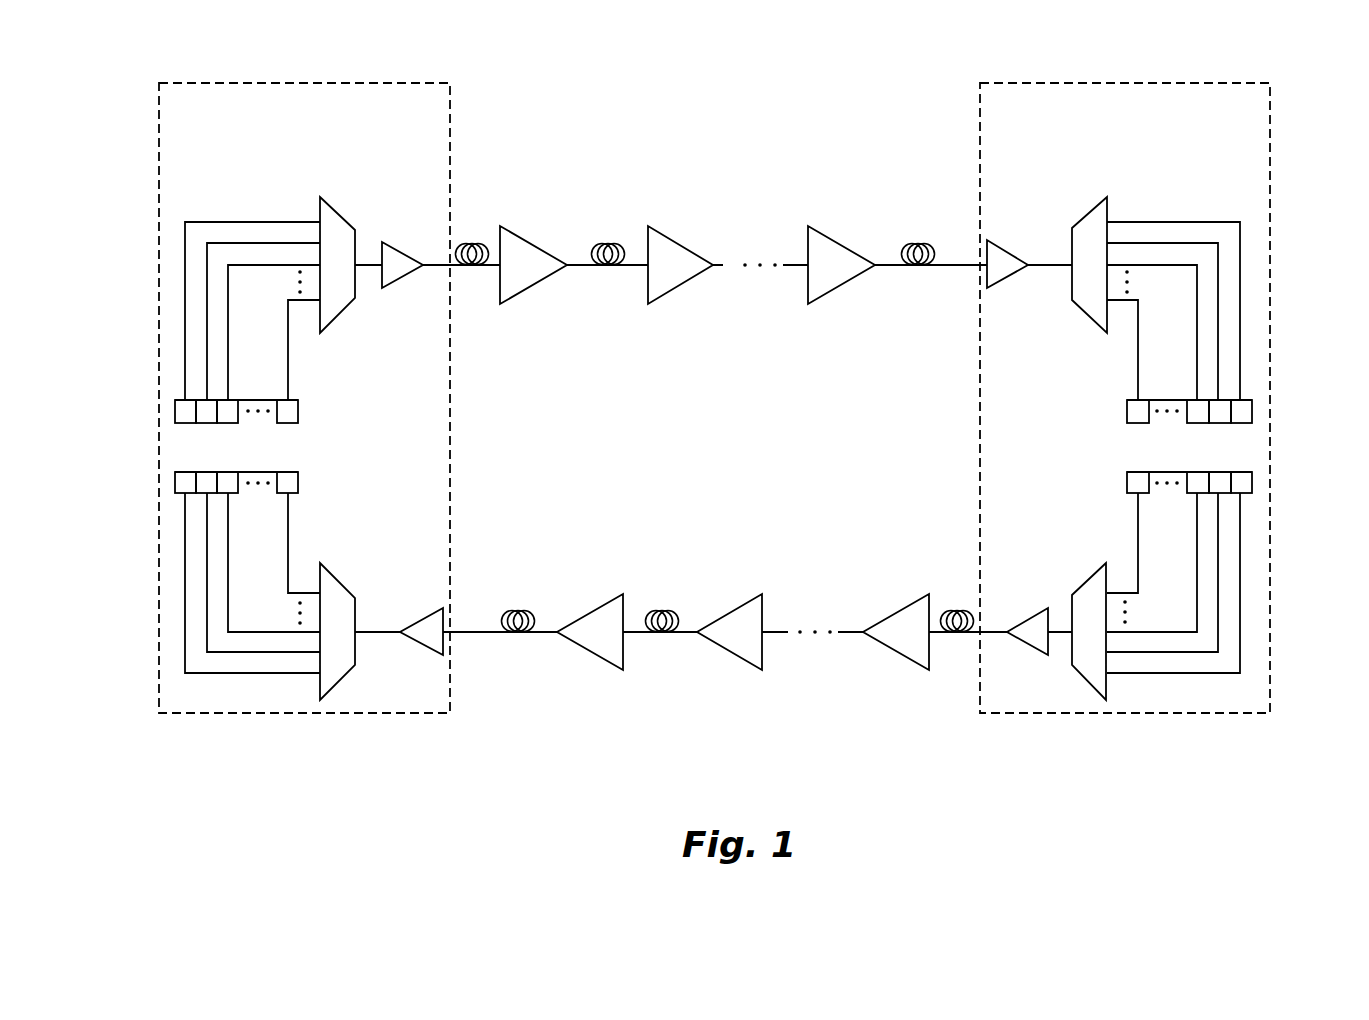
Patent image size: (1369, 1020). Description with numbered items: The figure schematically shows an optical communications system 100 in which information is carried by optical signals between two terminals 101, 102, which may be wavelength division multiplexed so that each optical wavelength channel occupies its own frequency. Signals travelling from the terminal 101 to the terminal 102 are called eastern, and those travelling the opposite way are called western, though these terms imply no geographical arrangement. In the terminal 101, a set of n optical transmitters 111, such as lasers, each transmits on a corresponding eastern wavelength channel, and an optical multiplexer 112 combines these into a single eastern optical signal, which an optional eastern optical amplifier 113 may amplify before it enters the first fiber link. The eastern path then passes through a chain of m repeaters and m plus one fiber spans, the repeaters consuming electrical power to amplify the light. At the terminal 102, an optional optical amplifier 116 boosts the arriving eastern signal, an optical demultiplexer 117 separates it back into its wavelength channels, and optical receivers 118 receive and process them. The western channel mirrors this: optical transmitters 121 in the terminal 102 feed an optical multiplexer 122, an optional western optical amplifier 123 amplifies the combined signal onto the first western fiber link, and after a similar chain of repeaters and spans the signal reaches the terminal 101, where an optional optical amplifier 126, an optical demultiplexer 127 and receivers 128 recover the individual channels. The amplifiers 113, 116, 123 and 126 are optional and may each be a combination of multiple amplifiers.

The optical communications system 100 is at (738, 51).
The terminal 101 is at (375, 124).
The terminal 102 is at (1195, 124).
The optical transmitters 111 is at (300, 411).
The optical multiplexer 112 is at (340, 216).
The eastern optical amplifier 113 is at (412, 258).
The optical amplifier 116 is at (1012, 255).
The optical demultiplexer 117 is at (1088, 214).
The optical receivers 118 is at (1124, 411).
The optical transmitters 121 is at (1124, 483).
The optical multiplexer 122 is at (1085, 583).
The western optical amplifier 123 is at (1028, 644).
The optical amplifier 126 is at (418, 642).
The optical demultiplexer 127 is at (340, 583).
The receivers 128 is at (300, 483).